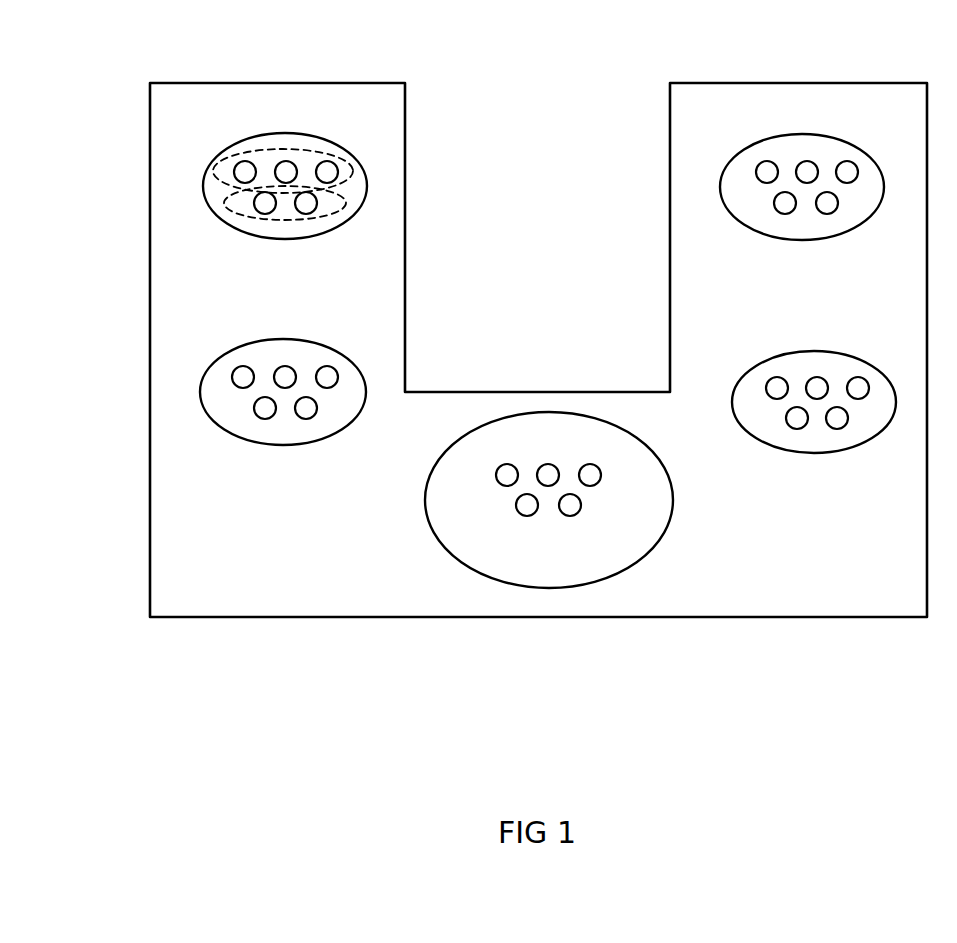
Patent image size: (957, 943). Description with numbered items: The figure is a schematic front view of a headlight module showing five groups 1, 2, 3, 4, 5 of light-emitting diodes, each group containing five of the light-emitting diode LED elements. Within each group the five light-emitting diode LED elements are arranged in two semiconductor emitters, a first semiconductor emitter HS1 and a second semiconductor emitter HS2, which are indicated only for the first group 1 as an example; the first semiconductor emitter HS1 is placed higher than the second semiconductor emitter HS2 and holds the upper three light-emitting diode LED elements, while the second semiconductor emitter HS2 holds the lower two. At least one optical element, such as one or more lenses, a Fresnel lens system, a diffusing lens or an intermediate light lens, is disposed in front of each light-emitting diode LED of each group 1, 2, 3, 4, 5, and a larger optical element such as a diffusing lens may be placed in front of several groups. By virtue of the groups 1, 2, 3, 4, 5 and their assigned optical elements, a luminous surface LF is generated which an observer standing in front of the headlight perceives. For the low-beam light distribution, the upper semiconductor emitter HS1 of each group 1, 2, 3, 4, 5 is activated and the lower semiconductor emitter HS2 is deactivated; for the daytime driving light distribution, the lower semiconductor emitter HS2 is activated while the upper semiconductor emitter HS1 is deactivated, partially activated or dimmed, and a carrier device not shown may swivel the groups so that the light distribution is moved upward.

The luminous surface LF is at (283, 95).
The light-emitting diode LED is at (325, 163).
The first semiconductor emitter HS1 is at (220, 177).
The second semiconductor emitter HS2 is at (228, 200).
The group of light-emitting diodes 1 is at (210, 209).
The group of light-emitting diodes 2 is at (283, 434).
The group of light-emitting diodes 3 is at (560, 507).
The group of light-emitting diodes 4 is at (814, 444).
The group of light-emitting diodes 5 is at (814, 224).